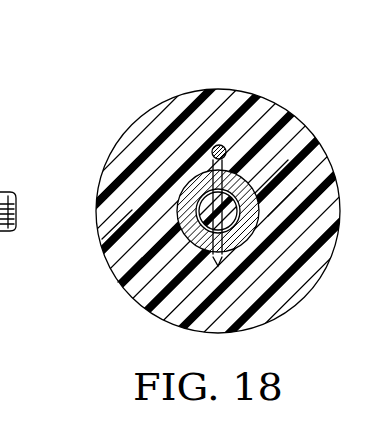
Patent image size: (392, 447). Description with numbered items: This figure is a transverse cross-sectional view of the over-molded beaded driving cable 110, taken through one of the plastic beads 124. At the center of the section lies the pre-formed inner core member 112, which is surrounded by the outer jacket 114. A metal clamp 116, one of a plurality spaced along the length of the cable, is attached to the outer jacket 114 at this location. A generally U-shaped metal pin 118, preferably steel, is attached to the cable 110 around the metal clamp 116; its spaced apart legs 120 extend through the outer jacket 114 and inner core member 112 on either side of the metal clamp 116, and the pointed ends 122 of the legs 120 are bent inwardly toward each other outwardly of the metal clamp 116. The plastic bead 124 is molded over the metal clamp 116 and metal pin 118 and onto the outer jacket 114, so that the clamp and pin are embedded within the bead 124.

The over-molded beaded driving cable 110 is at (128, 99).
The pre-formed inner core member 112 is at (118, 282).
The outer jacket 114 is at (288, 160).
The metal clamp 116 is at (296, 188).
The metal pin 118 is at (226, 145).
The spaced apart legs 120 is at (236, 172).
The pointed ends 122 is at (208, 256).
The plastic bead 124 is at (102, 239).